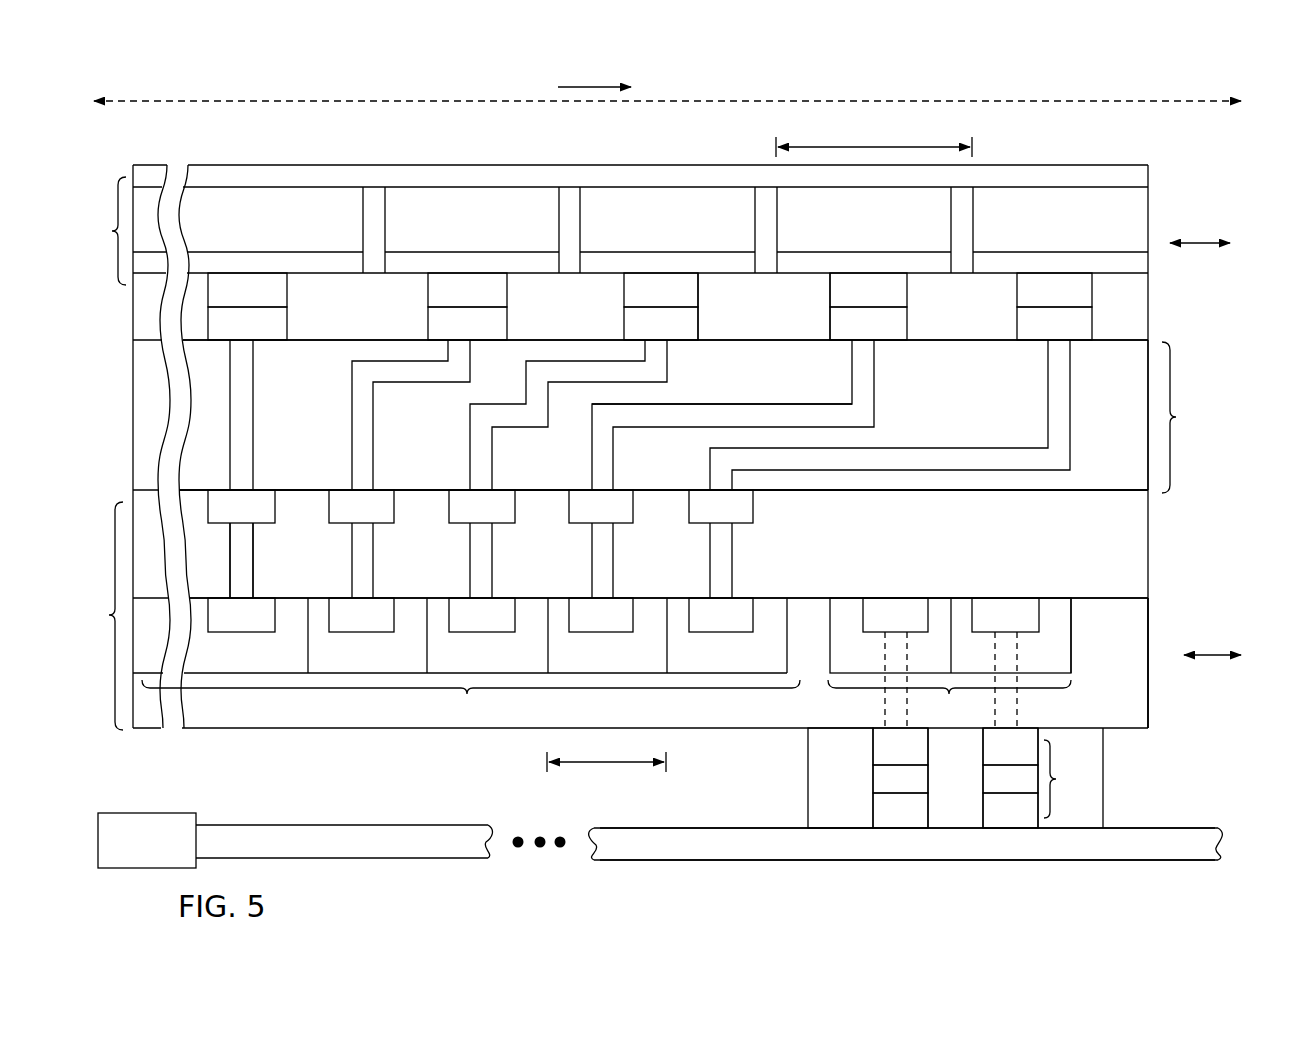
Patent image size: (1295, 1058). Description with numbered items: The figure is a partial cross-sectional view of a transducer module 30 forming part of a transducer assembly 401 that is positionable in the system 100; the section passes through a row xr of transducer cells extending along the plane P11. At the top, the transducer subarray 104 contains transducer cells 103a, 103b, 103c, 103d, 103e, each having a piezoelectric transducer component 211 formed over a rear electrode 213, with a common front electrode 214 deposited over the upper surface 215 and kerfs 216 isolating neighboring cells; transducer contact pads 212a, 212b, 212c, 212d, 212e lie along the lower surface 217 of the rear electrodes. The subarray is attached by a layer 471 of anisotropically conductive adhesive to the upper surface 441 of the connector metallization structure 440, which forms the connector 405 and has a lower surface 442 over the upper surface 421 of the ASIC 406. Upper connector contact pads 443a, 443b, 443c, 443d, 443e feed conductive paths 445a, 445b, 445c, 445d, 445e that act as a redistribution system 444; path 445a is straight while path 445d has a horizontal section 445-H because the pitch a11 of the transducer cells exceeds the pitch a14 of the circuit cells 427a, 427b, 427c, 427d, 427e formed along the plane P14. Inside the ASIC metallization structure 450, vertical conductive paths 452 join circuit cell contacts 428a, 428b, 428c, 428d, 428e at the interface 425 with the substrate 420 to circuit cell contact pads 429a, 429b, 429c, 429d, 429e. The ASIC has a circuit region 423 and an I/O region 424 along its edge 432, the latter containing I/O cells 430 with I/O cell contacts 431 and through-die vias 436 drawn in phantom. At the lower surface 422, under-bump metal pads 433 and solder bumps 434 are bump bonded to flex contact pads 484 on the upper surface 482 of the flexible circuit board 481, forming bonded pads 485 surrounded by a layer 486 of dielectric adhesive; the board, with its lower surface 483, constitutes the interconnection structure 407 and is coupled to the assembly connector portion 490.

The transducer module 30 is at (300, 140).
The system 100 is at (1218, 66).
The transducer assembly 401 is at (917, 100).
The upper surface 215 is at (405, 187).
The kerfs 216 is at (571, 210).
The front electrode 214 is at (1127, 178).
The transducer component 211 is at (1125, 215).
The rear electrode 213 is at (1125, 267).
The transducer subarray 104 is at (97, 231).
The lower surface 217 is at (193, 278).
The transducer cell 103a is at (257, 212).
The transducer cell 103b is at (465, 212).
The transducer cell 103c is at (628, 212).
The transducer cell 103d is at (872, 212).
The transducer cell 103e is at (1041, 212).
The transducer contact pad 212a is at (247, 290).
The transducer contact pad 212b is at (467, 290).
The transducer contact pad 212c is at (661, 290).
The transducer contact pad 212d is at (868, 290).
The transducer contact pad 212e is at (1054, 290).
The upper connector contact pad 443a is at (247, 323).
The upper connector contact pad 443b is at (467, 323).
The upper connector contact pad 443c is at (661, 323).
The upper connector contact pad 443d is at (868, 323).
The upper connector contact pad 443e is at (1054, 323).
The layer of anisotropically conductive adhesive 471 is at (764, 306).
The upper surface 441 is at (1125, 342).
The connector metallization structure 440 is at (663, 415).
The lower surface 442 is at (1115, 493).
The ASIC metallization structure 450 is at (663, 544).
The upper surface 425 is at (1115, 598).
The conductive path 445a is at (258, 468).
The conductive path 445b is at (380, 460).
The conductive path 445c is at (499, 483).
The conductive path 445d is at (620, 483).
The conductive path 445e is at (930, 445).
The horizontal section 445-H is at (797, 402).
The upper surface 421 is at (197, 472).
The conductive paths 452 is at (230, 557).
The ASIC 406 is at (95, 616).
The connector 405 is at (1152, 385).
The redistribution system 444 is at (1188, 417).
The first plane P11 is at (1200, 243).
The second plane P14 is at (1213, 655).
The circuit cell contact pad 429a is at (241, 506).
The circuit cell contact pad 429b is at (361, 506).
The circuit cell contact pad 429c is at (482, 506).
The circuit cell contact pad 429d is at (601, 506).
The circuit cell contact pad 429e is at (721, 506).
The circuit cell contact 428a is at (241, 615).
The circuit cell contact 428b is at (361, 615).
The circuit cell contact 428c is at (482, 615).
The circuit cell contact 428d is at (601, 615).
The circuit cell contact 428e is at (721, 615).
The circuit cell 427a is at (260, 635).
The circuit cell 427b is at (391, 635).
The circuit cell 427c is at (506, 635).
The circuit cell 427d is at (625, 635).
The circuit cell 427e is at (745, 635).
The circuit region 423 is at (466, 697).
The I/O cells 430 is at (950, 635).
The I/O cell contact 431 is at (951, 615).
The I/O region 424 is at (949, 702).
The substrate 420 is at (1109, 663).
The edge 432 is at (1152, 672).
The lower surface 422 is at (228, 732).
The through-die vias 436 is at (880, 722).
The layer of dielectric adhesive 486 is at (840, 778).
The under-bump metal pad 433 is at (955, 746).
The solder bumps 434 is at (955, 779).
The flex contact pads 484 is at (955, 810).
The bonded pads 485 is at (1011, 778).
The upper surface 482 is at (1115, 827).
The flexible circuit board 481 is at (906, 844).
The interconnection structure 407 is at (1162, 826).
The lower surface 483 is at (1125, 860).
The assembly connector portion 490 is at (295, 840).
The first pitch spacing a11 is at (874, 138).
The second pitch spacing a14 is at (606, 775).
The row xr is at (594, 73).